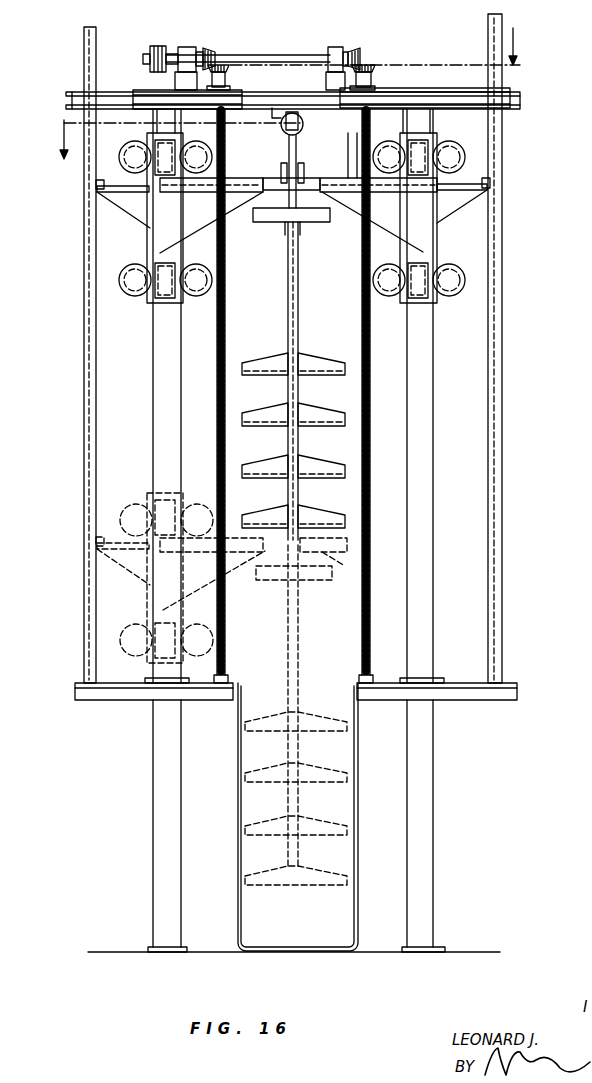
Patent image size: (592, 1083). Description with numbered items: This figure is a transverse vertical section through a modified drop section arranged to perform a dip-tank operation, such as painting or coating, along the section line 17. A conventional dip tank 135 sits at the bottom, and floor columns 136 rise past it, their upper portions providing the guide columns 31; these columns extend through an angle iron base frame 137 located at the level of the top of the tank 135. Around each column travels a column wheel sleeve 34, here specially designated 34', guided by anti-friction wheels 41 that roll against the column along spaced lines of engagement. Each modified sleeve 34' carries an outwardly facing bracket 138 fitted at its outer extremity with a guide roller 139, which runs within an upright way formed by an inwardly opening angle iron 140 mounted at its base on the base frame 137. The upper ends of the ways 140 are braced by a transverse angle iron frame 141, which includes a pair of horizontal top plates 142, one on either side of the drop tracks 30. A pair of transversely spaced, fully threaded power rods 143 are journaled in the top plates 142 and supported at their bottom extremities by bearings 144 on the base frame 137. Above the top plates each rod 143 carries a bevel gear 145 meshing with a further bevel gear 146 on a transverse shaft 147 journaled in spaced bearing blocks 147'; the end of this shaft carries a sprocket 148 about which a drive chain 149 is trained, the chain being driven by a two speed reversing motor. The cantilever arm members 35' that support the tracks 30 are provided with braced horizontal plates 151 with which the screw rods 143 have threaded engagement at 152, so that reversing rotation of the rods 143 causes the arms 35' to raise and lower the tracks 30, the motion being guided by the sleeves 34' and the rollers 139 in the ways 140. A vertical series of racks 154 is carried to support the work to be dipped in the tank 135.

The section line 17 is at (290, 93).
The track lengths 30 is at (292, 487).
The guide columns 31 is at (162, 469).
The sleeve 34 is at (435, 218).
The modified sleeve 34' is at (141, 430).
The cantilever arm members 35' is at (298, 397).
The anti-friction wheels 41 is at (133, 150).
The dip tank 135 is at (358, 842).
The floor columns 136 is at (430, 876).
The angle iron base frame 137 is at (497, 695).
The bracket 138 is at (124, 200).
The guide roller 139 is at (494, 184).
The angle iron way 140 is at (90, 402).
The transverse angle iron frame 141 is at (500, 100).
The horizontal top plates 142 is at (405, 90).
The power rods 143 is at (217, 400).
The bearings 144 is at (222, 684).
The bevel gear 145 is at (228, 70).
The bevel gears 146 is at (210, 48).
The transverse shaft 147 is at (248, 42).
The bearing blocks 147' is at (227, 68).
The sprocket 148 is at (172, 56).
The drive chain 149 is at (157, 46).
The braced horizontal plates 151 is at (232, 180).
The threaded engagement 152 is at (360, 180).
The racks 154 is at (268, 366).